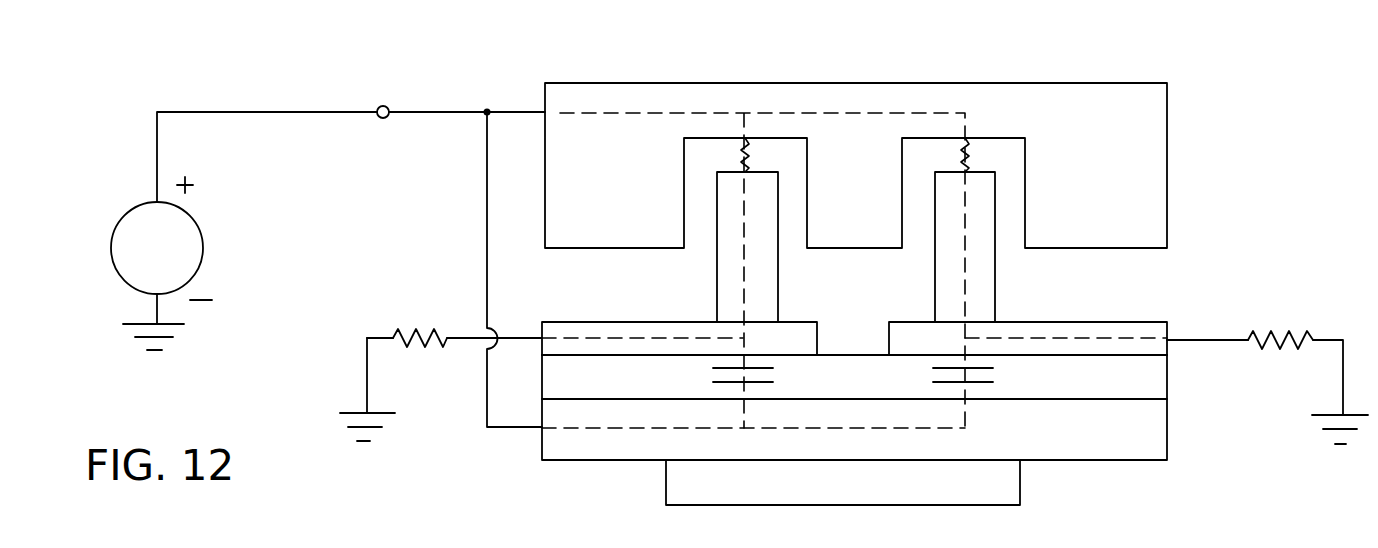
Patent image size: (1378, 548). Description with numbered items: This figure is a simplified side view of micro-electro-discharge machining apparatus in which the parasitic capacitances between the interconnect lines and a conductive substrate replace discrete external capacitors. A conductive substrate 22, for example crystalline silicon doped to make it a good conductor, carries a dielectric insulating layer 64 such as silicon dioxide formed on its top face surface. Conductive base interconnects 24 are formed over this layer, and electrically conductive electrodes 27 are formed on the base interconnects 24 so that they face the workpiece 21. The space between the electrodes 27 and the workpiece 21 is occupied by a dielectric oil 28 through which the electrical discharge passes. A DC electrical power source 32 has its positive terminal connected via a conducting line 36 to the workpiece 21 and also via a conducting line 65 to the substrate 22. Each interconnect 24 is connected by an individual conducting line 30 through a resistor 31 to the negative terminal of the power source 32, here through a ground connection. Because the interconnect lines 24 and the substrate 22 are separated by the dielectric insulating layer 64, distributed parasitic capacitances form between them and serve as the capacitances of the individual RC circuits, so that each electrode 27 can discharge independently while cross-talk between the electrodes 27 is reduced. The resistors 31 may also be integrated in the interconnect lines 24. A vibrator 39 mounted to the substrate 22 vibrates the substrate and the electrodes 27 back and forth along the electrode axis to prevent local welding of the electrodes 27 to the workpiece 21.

The workpiece 21 is at (1168, 120).
The substrate 22 is at (1135, 462).
The base interconnects 24 is at (575, 322).
The electrodes 27 is at (717, 271).
The dielectric oil 28 is at (843, 325).
The conducting line 30 is at (470, 342).
The resistor 31 is at (423, 328).
The DC electrical power source 32 is at (112, 262).
The conducting line 36 is at (440, 112).
The vibrator 39 is at (666, 478).
The dielectric insulating layer 64 is at (1167, 384).
The conducting line 65 is at (487, 186).